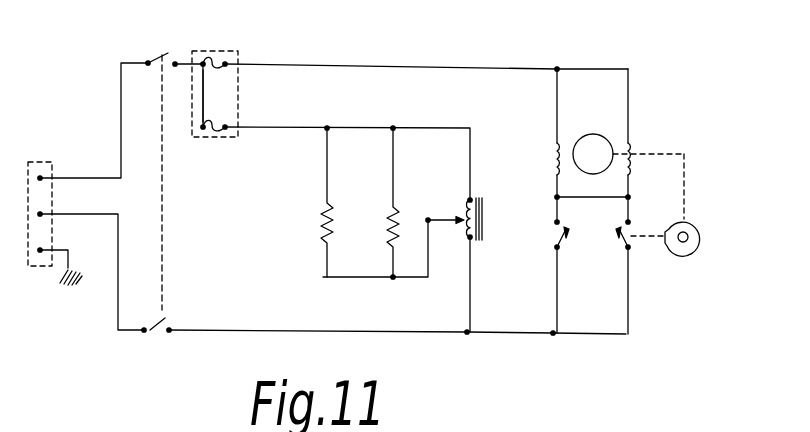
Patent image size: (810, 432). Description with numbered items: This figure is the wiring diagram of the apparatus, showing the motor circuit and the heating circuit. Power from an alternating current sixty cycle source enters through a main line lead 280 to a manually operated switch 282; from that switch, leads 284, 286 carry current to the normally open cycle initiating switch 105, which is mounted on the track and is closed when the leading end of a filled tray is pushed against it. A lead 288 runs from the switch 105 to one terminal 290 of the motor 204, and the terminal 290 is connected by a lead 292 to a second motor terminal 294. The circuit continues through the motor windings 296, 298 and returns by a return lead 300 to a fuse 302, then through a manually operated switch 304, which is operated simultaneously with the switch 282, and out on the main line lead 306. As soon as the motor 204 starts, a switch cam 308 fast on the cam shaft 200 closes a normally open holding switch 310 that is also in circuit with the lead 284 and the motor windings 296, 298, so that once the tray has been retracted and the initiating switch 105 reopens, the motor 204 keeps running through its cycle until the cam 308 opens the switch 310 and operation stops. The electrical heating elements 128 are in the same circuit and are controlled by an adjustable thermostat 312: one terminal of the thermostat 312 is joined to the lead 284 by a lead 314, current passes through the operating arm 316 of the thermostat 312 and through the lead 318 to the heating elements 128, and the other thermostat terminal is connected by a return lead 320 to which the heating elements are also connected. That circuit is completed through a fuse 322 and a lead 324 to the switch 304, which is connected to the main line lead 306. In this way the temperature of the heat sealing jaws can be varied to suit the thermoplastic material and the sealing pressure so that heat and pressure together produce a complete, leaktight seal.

The cycle initiating switch 105 is at (549, 231).
The electrical heating elements 128 is at (392, 211).
The cam shaft 200 is at (688, 232).
The motor 204 is at (597, 135).
The main line lead 280 is at (63, 215).
The manually operated switch 282 is at (154, 334).
The lead 284 is at (334, 333).
The lead 286 is at (557, 290).
The lead 288 is at (552, 208).
The motor terminal 290 is at (556, 197).
The lead 292 is at (575, 199).
The second motor terminal 294 is at (631, 201).
The motor winding 296 is at (553, 145).
The motor winding 298 is at (632, 145).
The return lead 300 is at (412, 67).
The fuse 302 is at (220, 62).
The manually operated switch 304 is at (171, 38).
The main line lead 306 is at (103, 160).
The switch cam 308 is at (683, 255).
The holding switch 310 is at (617, 241).
The adjustable thermostat 312 is at (486, 205).
The lead 314 is at (470, 300).
The operating arm 316 is at (446, 206).
The lead 318 is at (378, 278).
The return lead 320 is at (410, 128).
The fuse 322 is at (207, 133).
The lead 324 is at (203, 97).